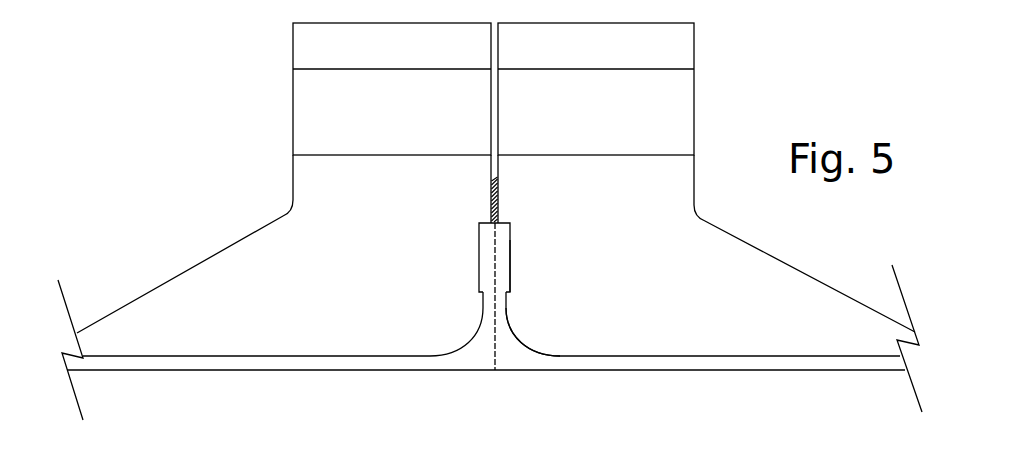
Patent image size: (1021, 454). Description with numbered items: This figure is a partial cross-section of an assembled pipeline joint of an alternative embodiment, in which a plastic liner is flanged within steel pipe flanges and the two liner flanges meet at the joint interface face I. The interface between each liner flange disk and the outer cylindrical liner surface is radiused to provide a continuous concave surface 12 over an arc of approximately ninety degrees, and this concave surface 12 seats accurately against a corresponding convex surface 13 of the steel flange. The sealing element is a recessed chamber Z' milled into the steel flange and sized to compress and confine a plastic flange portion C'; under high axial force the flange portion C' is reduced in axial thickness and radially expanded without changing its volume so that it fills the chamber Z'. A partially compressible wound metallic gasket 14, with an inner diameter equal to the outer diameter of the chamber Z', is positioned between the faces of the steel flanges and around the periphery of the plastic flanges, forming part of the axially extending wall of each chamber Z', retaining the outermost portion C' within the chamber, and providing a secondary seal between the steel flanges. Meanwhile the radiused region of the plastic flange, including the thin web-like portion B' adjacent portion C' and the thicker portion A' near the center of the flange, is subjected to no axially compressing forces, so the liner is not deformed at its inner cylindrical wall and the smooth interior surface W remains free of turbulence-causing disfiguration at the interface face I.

The wound metallic gasket 14 is at (500, 193).
The plastic flange portion C' is at (522, 257).
The recessed chamber Z' is at (540, 266).
The joint interface face I is at (495, 370).
The thin web-like portion B' is at (473, 294).
The thicker portion A' is at (495, 332).
The convex surface 13 is at (517, 330).
The concave surface 12 is at (530, 354).
The interior surface W is at (367, 373).